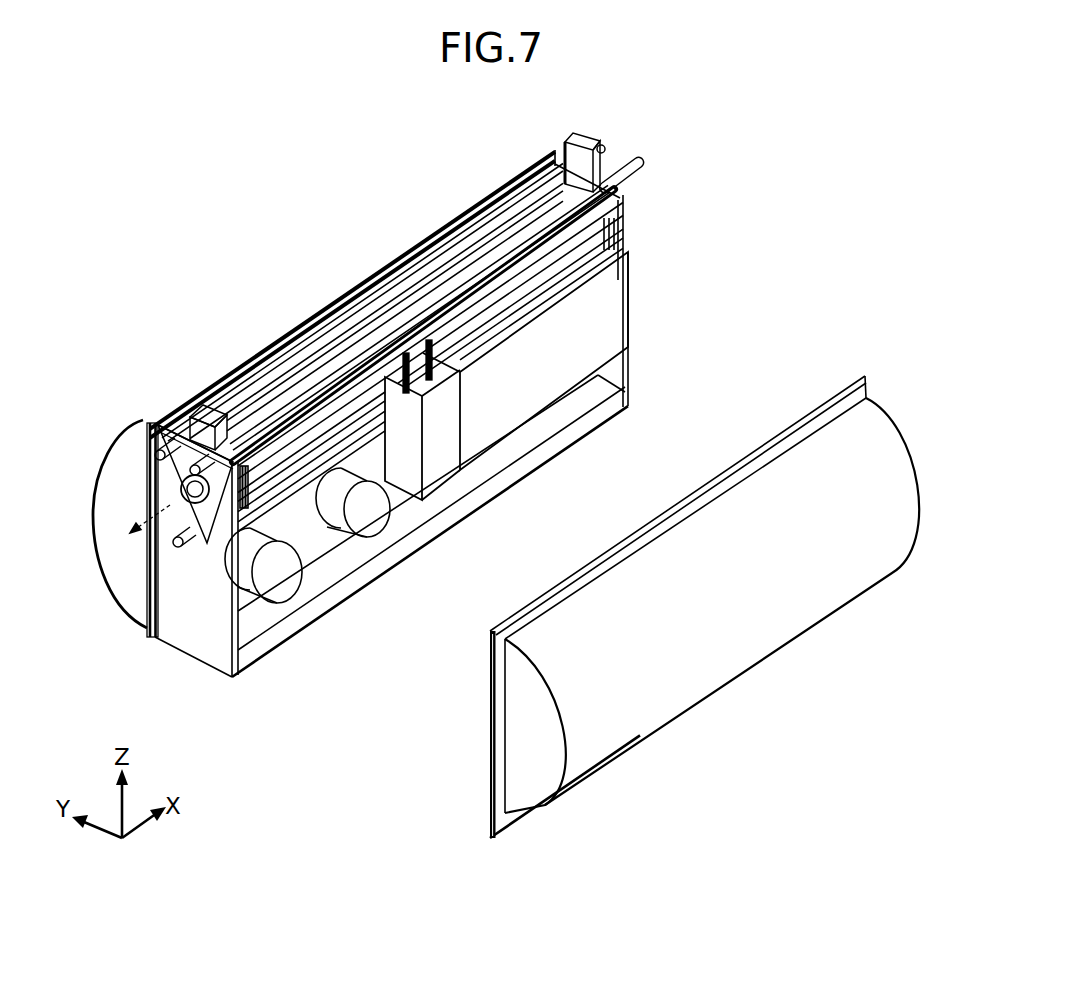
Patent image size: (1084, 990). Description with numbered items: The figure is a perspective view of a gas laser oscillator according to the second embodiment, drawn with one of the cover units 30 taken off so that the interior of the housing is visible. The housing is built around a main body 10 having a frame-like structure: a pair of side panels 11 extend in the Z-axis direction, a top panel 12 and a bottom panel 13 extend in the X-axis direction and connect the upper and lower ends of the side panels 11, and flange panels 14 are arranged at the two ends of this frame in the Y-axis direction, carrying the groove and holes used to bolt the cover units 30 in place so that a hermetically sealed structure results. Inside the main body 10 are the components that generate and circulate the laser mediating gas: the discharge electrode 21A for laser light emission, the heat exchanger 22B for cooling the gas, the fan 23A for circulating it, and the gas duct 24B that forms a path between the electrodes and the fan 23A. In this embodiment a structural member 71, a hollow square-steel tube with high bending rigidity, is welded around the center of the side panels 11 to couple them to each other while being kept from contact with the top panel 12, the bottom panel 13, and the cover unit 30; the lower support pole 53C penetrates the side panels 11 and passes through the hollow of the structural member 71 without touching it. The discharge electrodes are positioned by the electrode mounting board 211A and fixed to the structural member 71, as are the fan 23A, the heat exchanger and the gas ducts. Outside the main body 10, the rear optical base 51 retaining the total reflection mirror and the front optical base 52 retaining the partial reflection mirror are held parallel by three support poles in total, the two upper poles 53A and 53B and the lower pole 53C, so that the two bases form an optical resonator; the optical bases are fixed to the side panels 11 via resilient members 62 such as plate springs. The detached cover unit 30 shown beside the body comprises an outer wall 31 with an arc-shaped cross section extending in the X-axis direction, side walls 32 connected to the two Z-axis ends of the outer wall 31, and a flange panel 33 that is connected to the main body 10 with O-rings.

The main body 10 is at (231, 660).
The side panels 11 is at (160, 633).
The top panel 12 is at (343, 347).
The bottom panel 13 is at (270, 617).
The flange panels 14 is at (600, 427).
The discharge electrode 21A is at (310, 420).
The electrode mounting board 211A is at (272, 470).
The heat exchanger 22B is at (413, 438).
The fan 23A is at (378, 530).
The gas duct 24B is at (632, 297).
The cover unit 30 is at (105, 585).
The outer wall 31 is at (572, 775).
The side walls 32 is at (515, 802).
The flange panel 33 is at (498, 785).
The rear optical base 51 is at (627, 187).
The front optical base 52 is at (147, 478).
The support pole 53A is at (397, 263).
The support pole 53B is at (487, 262).
The support pole 53C is at (186, 545).
The resilient members 62 is at (172, 435).
The structural member 71 is at (403, 475).